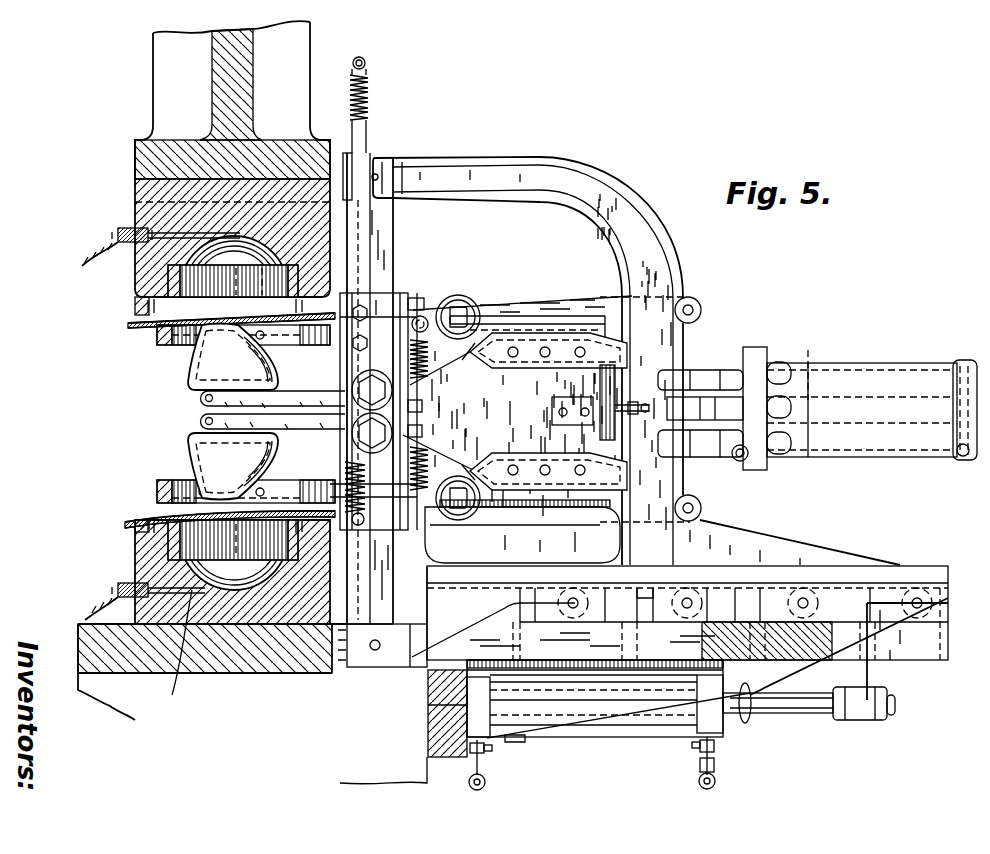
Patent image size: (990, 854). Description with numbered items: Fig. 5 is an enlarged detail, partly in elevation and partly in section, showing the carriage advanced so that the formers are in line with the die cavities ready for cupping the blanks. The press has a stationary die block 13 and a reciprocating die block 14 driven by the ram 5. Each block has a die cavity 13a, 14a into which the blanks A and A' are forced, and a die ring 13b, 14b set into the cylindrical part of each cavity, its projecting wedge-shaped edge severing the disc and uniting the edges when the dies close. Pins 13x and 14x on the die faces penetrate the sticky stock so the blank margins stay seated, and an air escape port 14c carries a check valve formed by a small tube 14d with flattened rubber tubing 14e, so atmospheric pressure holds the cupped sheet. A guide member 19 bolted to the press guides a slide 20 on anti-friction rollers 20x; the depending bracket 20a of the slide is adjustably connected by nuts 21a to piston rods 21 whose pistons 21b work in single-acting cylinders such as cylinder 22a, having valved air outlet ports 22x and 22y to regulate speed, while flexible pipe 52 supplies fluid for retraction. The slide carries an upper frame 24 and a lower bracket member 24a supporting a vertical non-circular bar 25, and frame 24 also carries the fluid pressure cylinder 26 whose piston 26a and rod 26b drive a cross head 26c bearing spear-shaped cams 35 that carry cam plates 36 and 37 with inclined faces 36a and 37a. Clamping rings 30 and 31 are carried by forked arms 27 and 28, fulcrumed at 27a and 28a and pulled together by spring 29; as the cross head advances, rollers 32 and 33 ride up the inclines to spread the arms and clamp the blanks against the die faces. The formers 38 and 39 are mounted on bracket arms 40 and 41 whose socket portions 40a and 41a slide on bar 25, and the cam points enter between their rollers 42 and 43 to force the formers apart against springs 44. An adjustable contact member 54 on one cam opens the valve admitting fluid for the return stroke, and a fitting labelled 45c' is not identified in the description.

The ram 5 is at (172, 90).
The reciprocating die block 14 is at (165, 192).
The die cavity 14a is at (234, 264).
The die ring 14b is at (280, 285).
The air escape port 14c is at (215, 235).
The small tube 14d is at (124, 264).
The rubber tubing 14e is at (80, 258).
The projections or pins 14x is at (136, 313).
The blank A' is at (222, 334).
The clamping ring 31 is at (180, 345).
The clamping ring 30 is at (170, 482).
The plunger or former 39 is at (233, 357).
The plunger or former 38 is at (233, 466).
The bracket arm 41 is at (283, 400).
The bracket arm 40 is at (288, 422).
The lever or arm 27 is at (338, 486).
The stationary die block 13 is at (150, 560).
The die cavity 13a is at (234, 560).
The die ring 13b is at (290, 540).
The blank A is at (221, 507).
The projections or pins 13x is at (136, 526).
The vertical non-circular bar 25 is at (386, 256).
The lower bracket member 24a is at (372, 652).
The springs 44 is at (372, 100).
The upper frame 24 is at (580, 177).
The fulcrum 28a is at (702, 306).
The fulcrum 27a is at (702, 506).
The lever or arm 28 is at (516, 311).
The anti-friction roller 32 is at (472, 518).
The anti-friction roller 33 is at (460, 303).
The spear shaped cams 35 is at (510, 426).
The cam plate 37 is at (548, 357).
The inclined cam face 37a is at (468, 362).
The cam plate 36 is at (482, 472).
The inclined cam face 36a is at (455, 469).
The spring 29 is at (435, 403).
The socket portion 41a is at (345, 336).
The anti-friction rollers 43 is at (352, 388).
The anti-friction rollers 42 is at (352, 434).
The socket portion 40a is at (352, 478).
The cross head 26c is at (600, 385).
The adjustable contact member 54 is at (642, 404).
The fluid pressure cylinder 26 is at (852, 366).
The piston 26a is at (958, 364).
The piston rod 26b is at (808, 392).
The slide 20 is at (900, 572).
The anti-friction rollers 20x is at (573, 612).
The depending bracket 20a is at (880, 673).
The bracket or guide member 19 is at (432, 707).
The cylinder 22a is at (606, 718).
The piston 21b is at (516, 742).
The piston rod 21 is at (790, 713).
The nut 21a is at (880, 722).
The flexible pipe 52 is at (469, 783).
The air outlet port 22y is at (488, 752).
The air outlet port 22x is at (700, 745).
The pipe 45c' is at (735, 778).